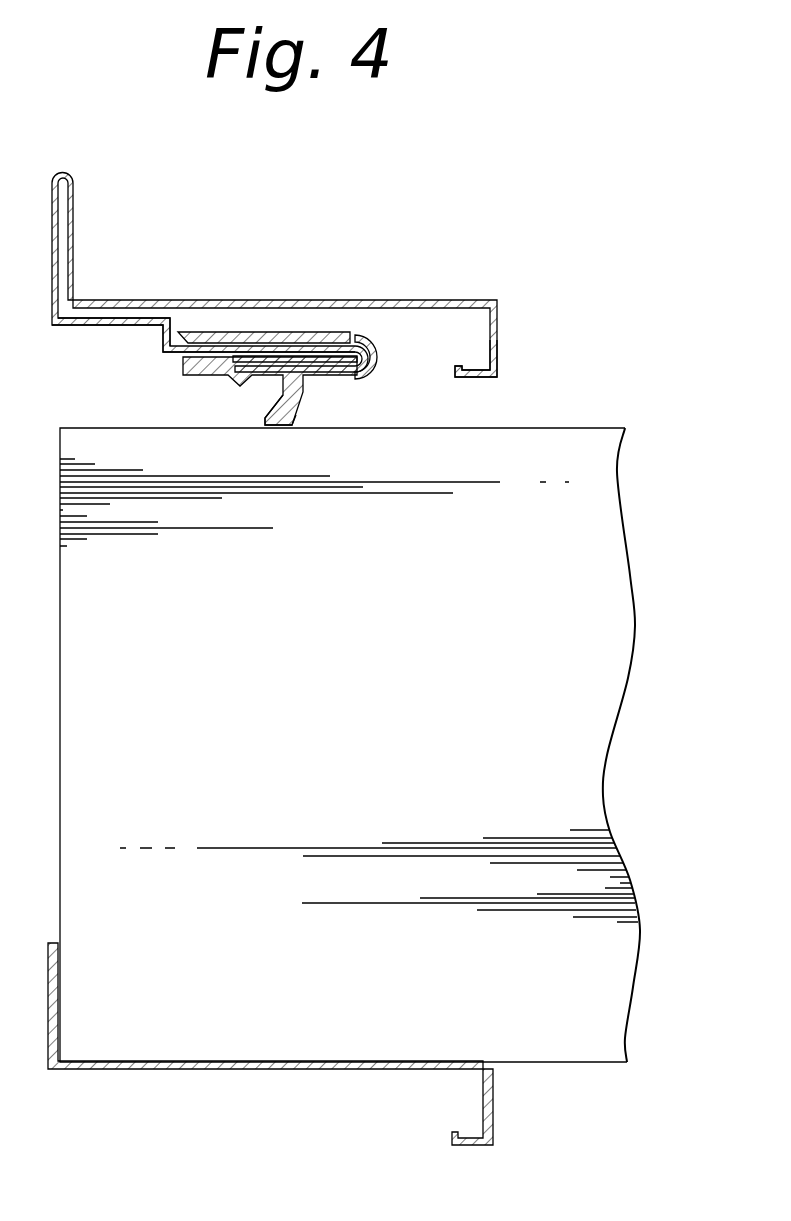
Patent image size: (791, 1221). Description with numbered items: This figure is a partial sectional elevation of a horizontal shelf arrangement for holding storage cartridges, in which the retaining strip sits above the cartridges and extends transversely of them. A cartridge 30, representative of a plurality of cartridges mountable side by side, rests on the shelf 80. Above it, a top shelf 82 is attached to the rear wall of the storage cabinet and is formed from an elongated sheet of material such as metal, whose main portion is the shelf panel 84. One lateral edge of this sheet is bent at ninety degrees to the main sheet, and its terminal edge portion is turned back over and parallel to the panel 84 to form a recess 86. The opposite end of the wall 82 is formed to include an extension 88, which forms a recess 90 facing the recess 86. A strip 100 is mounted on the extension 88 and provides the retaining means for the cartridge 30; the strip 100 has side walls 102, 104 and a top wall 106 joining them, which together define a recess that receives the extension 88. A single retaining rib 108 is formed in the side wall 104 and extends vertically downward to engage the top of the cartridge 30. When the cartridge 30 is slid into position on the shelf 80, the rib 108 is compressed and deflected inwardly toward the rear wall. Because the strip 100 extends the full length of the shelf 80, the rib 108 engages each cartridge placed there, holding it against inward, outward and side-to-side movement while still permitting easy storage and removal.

The cartridge 30 is at (608, 796).
The shelf 80 is at (145, 1068).
The top shelf 82 is at (305, 290).
The shelf panel 84 is at (470, 300).
The recess 86 is at (456, 348).
The extension 88 is at (163, 340).
The recess 90 is at (318, 321).
The strip 100 is at (380, 366).
The side wall 102 is at (257, 333).
The side wall 104 is at (318, 378).
The top wall 106 is at (380, 356).
The retaining rib 108 is at (270, 420).